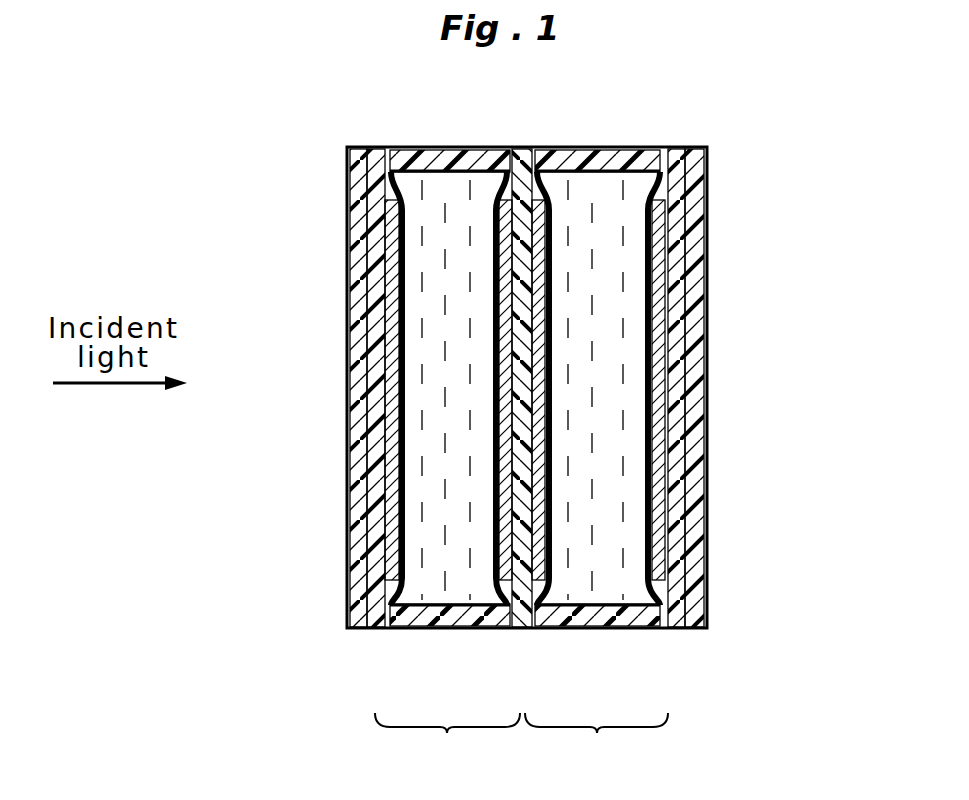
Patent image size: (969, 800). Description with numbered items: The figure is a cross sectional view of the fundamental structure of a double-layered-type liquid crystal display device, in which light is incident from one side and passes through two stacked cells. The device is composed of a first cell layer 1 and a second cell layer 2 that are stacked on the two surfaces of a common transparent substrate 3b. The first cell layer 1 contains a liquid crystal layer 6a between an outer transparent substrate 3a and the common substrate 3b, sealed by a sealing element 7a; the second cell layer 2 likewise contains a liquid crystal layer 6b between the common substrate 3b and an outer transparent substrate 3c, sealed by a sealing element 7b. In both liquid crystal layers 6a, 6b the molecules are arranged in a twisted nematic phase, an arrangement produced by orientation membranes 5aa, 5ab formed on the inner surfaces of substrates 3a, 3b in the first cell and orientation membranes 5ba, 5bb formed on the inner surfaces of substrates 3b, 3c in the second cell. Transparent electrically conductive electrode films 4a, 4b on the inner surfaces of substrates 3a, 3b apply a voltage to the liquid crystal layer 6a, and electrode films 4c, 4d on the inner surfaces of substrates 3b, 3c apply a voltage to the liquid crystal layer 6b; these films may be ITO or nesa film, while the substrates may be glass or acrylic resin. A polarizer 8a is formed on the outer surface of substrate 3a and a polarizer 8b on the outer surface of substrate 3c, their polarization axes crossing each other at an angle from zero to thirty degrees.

The first cell layer 1 is at (447, 744).
The second cell layer 2 is at (596, 744).
The transparent substrate 3a is at (375, 632).
The common transparent substrate 3b is at (517, 632).
The transparent substrate 3c is at (668, 632).
The transparent electrical conductive electrode film 4a is at (393, 255).
The transparent electrical conductive electrode film 4b is at (495, 465).
The transparent electrical conductive electrode film 4c is at (548, 300).
The transparent electrical conductive electrode film 4d is at (657, 493).
The orientation membrane 5aa is at (390, 545).
The orientation membrane 5ab is at (497, 557).
The orientation membrane 5ba is at (540, 563).
The orientation membrane 5bb is at (650, 547).
The liquid crystal layer 6a is at (410, 150).
The liquid crystal layer 6b is at (570, 150).
The sealing element 7a is at (433, 200).
The sealing element 7b is at (587, 195).
The polarizer 8a is at (365, 205).
The polarizer 8b is at (690, 238).